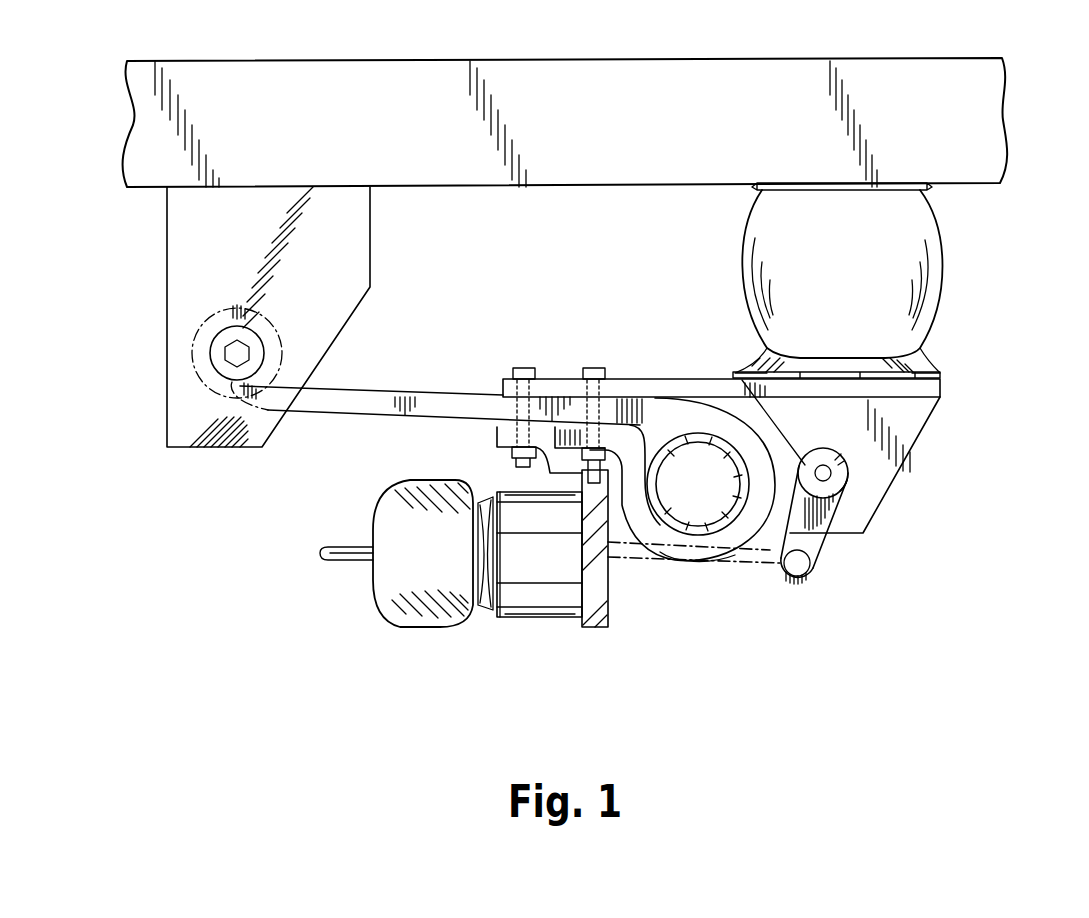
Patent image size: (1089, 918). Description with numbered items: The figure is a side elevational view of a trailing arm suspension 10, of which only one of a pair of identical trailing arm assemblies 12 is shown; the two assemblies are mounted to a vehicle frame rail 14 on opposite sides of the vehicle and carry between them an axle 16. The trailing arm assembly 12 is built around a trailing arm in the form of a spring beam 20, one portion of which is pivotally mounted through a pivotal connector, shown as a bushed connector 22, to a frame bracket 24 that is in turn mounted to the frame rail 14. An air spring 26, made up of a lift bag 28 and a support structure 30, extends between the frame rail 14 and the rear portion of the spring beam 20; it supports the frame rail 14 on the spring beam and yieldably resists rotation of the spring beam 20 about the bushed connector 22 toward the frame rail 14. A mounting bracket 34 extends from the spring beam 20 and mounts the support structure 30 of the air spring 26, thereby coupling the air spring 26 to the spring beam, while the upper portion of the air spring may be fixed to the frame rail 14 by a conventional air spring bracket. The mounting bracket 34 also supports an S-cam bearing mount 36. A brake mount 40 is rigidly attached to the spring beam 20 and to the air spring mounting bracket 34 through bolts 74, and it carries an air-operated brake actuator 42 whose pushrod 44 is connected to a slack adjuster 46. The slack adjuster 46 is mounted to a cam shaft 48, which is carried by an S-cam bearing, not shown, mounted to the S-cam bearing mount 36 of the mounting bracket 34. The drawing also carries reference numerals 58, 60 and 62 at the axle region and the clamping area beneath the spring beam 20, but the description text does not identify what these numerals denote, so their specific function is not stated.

The trailing arm suspension 10 is at (593, 30).
The trailing arm assembly 12 is at (243, 487).
The vehicle frame rail 14 is at (394, 57).
The axle 16 is at (718, 512).
The spring beam 20 is at (428, 392).
The bushed connector 22 is at (226, 335).
The frame bracket 24 is at (167, 343).
The air spring 26 is at (950, 257).
The lift bag 28 is at (745, 232).
The support structure 30 is at (913, 362).
The mounting bracket 34 is at (943, 418).
The S-cam bearing mount 36 is at (850, 485).
The brake mount 40 is at (595, 628).
The brake actuator 42 is at (400, 627).
The pushrod 44 is at (762, 568).
The slack adjuster 46 is at (822, 558).
The cam shaft 48 is at (737, 377).
The bottom of axle wrap 58 is at (693, 565).
The clamp bracket 60 is at (498, 434).
The axle bushing 62 is at (665, 527).
The bolts 74 is at (593, 367).